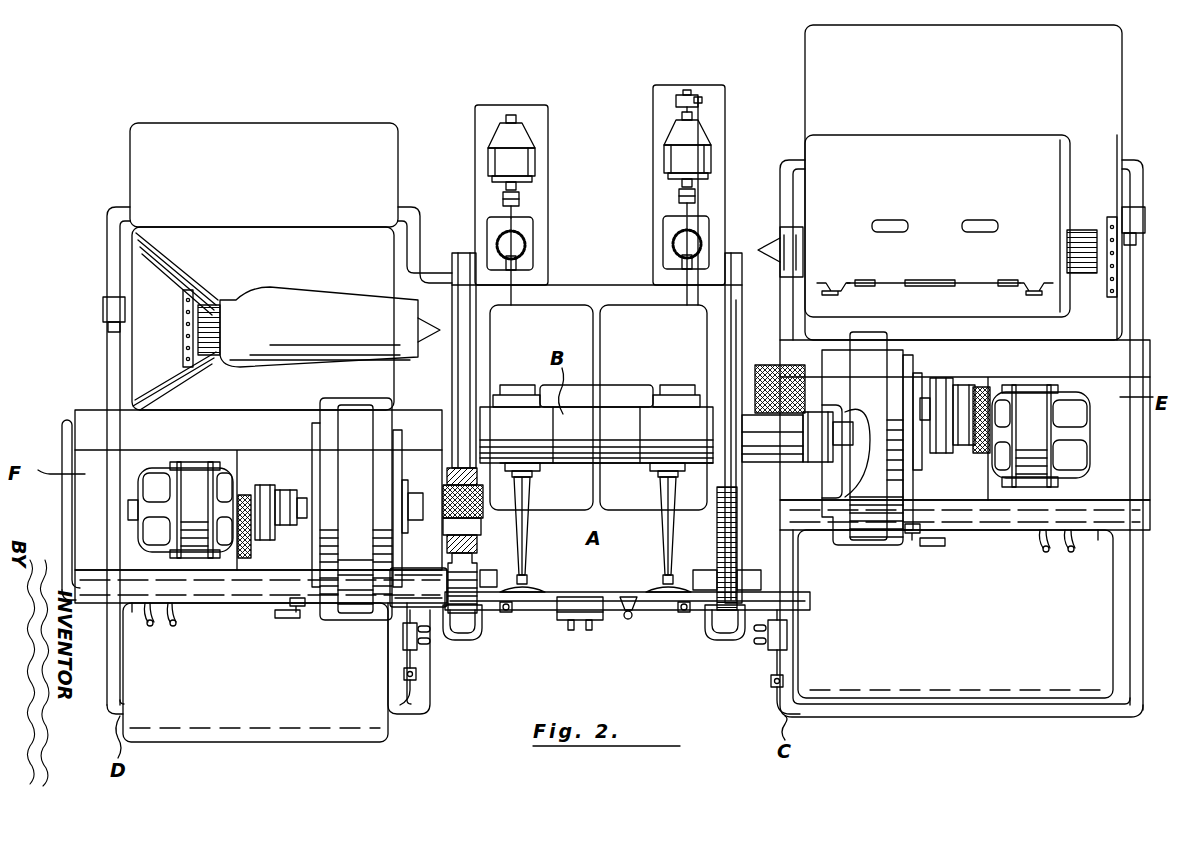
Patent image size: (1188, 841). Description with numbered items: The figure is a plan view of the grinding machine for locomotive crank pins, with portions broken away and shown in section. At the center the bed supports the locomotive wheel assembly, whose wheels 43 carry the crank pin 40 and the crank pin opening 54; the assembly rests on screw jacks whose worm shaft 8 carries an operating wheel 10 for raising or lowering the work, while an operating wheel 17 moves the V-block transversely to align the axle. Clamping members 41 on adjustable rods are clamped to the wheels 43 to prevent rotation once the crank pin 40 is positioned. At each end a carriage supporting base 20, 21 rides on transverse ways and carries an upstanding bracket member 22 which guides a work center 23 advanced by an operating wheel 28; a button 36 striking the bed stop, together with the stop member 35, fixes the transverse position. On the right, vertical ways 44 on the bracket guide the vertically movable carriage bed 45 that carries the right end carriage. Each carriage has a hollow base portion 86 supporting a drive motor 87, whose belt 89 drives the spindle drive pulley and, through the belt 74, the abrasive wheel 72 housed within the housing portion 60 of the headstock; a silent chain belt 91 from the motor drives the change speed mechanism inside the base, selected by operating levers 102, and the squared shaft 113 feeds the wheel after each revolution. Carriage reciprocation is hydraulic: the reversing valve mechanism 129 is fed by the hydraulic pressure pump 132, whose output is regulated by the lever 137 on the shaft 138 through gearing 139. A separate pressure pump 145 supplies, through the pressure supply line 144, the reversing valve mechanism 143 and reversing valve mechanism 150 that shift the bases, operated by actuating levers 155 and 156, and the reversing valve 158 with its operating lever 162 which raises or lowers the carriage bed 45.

The shaft 8 is at (518, 495).
The operating wheel 10 is at (529, 584).
The operating wheel 17 is at (531, 476).
The carriage supporting base 20 is at (963, 182).
The carriage supporting base 21 is at (264, 175).
The upstanding bracket member 22 is at (614, 272).
The work center 23 is at (418, 320).
The operating wheel 28 is at (190, 292).
The stop member 35 is at (103, 305).
The button 36 is at (108, 327).
The crank pin 40 is at (777, 462).
The clamping member 41 is at (468, 641).
The wheel 43 is at (725, 315).
The vertical ways 44 is at (838, 284).
The carriage bed 45 is at (933, 295).
The crank pin opening 54 is at (473, 535).
The housing portion 60 is at (326, 437).
The abrasive wheel 72 is at (450, 520).
The belt 74 is at (284, 526).
The hollow base portion 86 is at (135, 606).
The drive motor 87 is at (145, 470).
The belt 89 is at (266, 486).
The silent chain belt 91 is at (244, 560).
The operating lever 102 is at (150, 627).
The squared shaft 113 is at (290, 620).
The reversing valve mechanism 129 is at (292, 606).
The hydraulic pressure pump 132 is at (525, 225).
The lever 137 is at (510, 612).
The shaft 138 is at (517, 296).
The gearing 139 is at (520, 250).
The reversing valve mechanism 143 is at (420, 648).
The pressure supply line 144 is at (700, 112).
The pressure pump 145 is at (687, 95).
The reversing valve mechanism 150 is at (768, 640).
The actuating lever 155 is at (416, 676).
The actuating lever 156 is at (770, 682).
The reversing valve 158 is at (598, 622).
The operating lever 162 is at (628, 620).